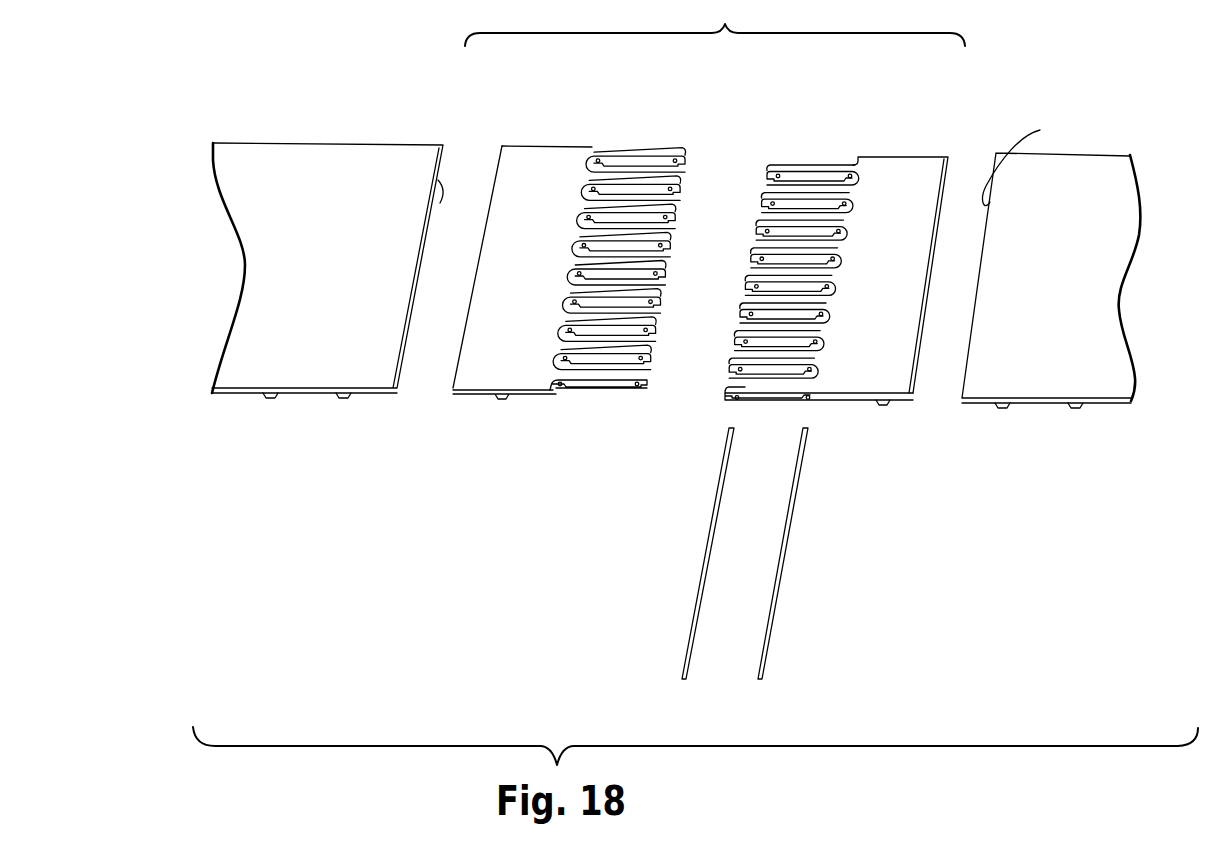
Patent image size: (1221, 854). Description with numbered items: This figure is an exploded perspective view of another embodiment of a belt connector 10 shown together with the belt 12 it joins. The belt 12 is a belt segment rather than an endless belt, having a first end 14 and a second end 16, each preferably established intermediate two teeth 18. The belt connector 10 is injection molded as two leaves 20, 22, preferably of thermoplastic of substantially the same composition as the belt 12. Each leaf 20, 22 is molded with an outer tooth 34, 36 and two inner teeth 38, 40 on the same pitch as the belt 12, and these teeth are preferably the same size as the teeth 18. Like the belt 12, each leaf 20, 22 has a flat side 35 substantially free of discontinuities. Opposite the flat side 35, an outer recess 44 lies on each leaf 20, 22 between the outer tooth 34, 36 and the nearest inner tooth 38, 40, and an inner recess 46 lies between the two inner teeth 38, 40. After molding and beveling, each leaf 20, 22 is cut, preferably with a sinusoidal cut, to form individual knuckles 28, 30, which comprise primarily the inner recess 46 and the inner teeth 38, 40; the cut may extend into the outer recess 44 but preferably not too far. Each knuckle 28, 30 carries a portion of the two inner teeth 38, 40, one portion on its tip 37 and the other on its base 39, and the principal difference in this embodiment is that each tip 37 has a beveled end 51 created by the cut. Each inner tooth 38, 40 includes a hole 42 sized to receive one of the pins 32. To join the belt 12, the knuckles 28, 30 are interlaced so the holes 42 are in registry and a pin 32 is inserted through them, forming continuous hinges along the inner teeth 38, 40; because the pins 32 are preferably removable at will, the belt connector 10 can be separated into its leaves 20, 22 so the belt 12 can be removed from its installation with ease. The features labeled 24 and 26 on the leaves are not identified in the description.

The belt connector 10 is at (715, 24).
The belt 12 is at (1051, 249).
The first end 14 is at (438, 180).
The second end 16 is at (1060, 186).
The teeth 18 is at (270, 399).
The leaf 20 is at (569, 282).
The leaf 22 is at (858, 283).
The edge of first contact plate 24 is at (497, 183).
The edge of second contact plate 26 is at (948, 178).
The knuckles 28 is at (612, 238).
The knuckles 30 is at (802, 247).
The pins 32 is at (696, 610).
The outer tooth 34 is at (497, 400).
The flat side 35 is at (487, 338).
The outer tooth 36 is at (883, 406).
The tip 37 is at (671, 214).
The inner tooth 38 is at (557, 395).
The base 39 is at (576, 241).
The inner tooth 40 is at (630, 390).
The hole 42 is at (562, 390).
The outer recess 44 is at (525, 395).
The inner recess 46 is at (603, 388).
The beveled end 51 is at (678, 213).